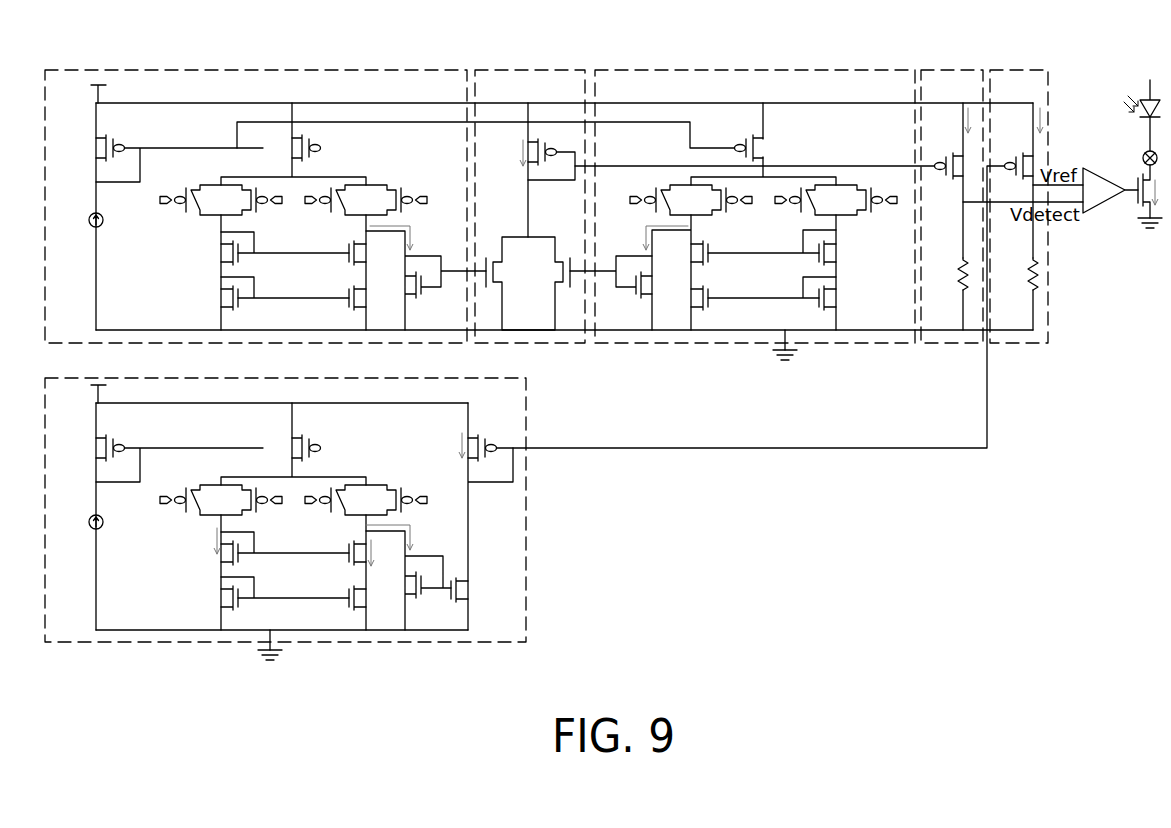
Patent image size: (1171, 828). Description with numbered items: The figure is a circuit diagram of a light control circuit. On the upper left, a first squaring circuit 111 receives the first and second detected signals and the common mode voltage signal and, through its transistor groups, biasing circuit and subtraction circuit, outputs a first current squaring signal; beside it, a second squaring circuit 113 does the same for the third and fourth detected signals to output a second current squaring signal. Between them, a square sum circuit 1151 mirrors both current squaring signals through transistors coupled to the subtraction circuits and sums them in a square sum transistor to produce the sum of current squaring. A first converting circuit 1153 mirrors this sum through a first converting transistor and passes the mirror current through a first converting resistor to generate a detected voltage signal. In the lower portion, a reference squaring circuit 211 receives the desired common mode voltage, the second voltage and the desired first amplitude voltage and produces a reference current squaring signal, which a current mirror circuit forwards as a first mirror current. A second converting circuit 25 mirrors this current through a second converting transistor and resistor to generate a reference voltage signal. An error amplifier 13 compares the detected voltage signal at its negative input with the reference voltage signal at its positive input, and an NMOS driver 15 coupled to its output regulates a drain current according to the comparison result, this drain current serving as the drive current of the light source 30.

The first squaring circuit 111 is at (272, 68).
The square sum circuit 1151 is at (540, 68).
The second squaring circuit 113 is at (778, 68).
The first converting circuit 1153 is at (953, 68).
The second converting circuit 25 is at (1040, 345).
The reference squaring circuit 211 is at (527, 548).
The light source 30 is at (1146, 93).
The error amplifier 13 is at (1094, 214).
The NMOS driver 15 is at (1148, 230).